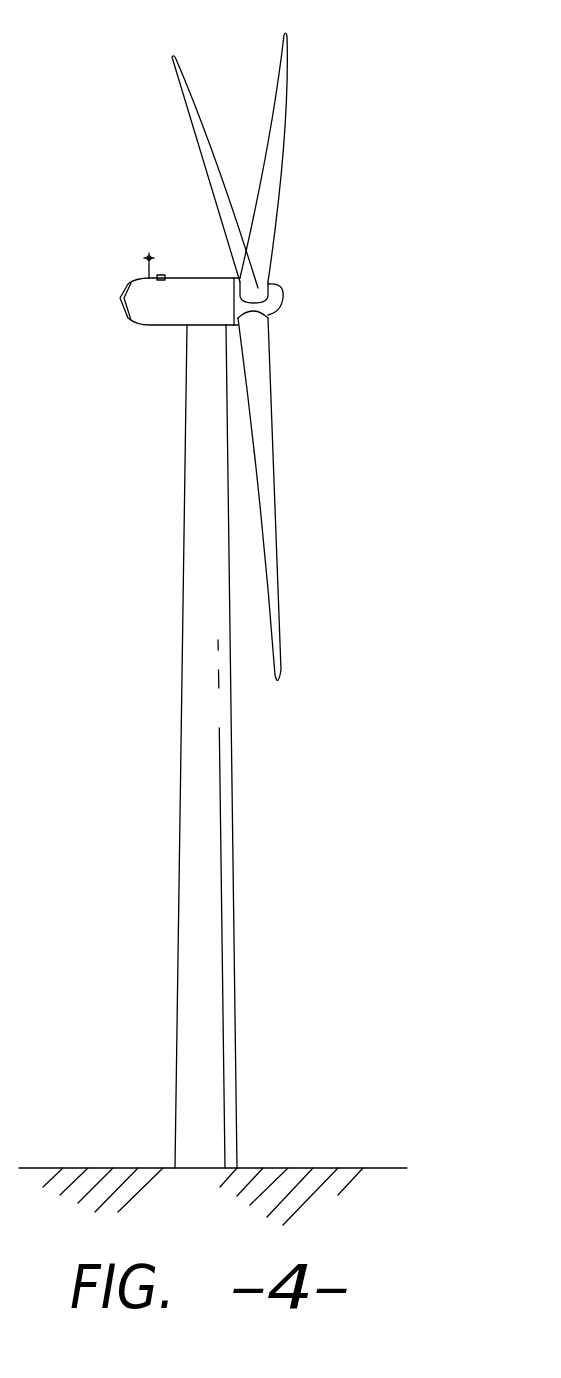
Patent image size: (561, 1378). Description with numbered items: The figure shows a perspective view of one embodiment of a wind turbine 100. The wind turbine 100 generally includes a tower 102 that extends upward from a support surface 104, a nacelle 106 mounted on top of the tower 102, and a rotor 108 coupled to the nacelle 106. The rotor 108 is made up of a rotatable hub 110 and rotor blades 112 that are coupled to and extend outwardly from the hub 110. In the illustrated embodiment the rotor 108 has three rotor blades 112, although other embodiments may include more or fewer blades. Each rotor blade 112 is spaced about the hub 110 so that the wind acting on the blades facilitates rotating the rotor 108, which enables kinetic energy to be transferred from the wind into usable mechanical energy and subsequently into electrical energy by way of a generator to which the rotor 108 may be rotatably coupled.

The wind turbine 100 is at (405, 139).
The tower 102 is at (192, 860).
The support surface 104 is at (303, 1167).
The nacelle 106 is at (163, 330).
The rotor 108 is at (306, 310).
The rotatable hub 110 is at (284, 300).
The rotor blade 112 is at (197, 137).